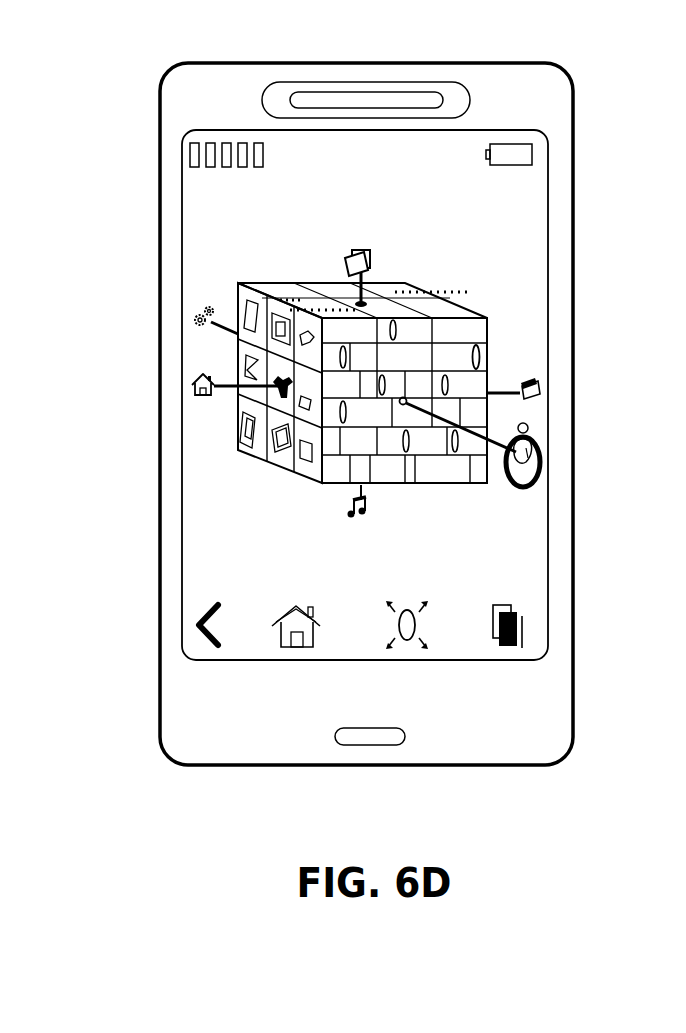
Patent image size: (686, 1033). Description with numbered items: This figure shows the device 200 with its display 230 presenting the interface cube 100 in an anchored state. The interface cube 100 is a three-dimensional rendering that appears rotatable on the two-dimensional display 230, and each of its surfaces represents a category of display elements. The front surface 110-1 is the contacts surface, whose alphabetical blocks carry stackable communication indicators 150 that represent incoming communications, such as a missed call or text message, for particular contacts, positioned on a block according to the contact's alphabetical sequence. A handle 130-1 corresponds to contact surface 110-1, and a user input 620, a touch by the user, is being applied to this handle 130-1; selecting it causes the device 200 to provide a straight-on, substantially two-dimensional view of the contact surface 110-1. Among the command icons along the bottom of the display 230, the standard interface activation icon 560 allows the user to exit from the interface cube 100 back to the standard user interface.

The device 200 is at (197, 46).
The display 230 is at (250, 130).
The interface cube 100 is at (378, 365).
The surface 110-1 is at (485, 323).
The communication indicator 150 is at (485, 365).
The handle 130-1 is at (527, 428).
The user input 620 is at (522, 487).
The standard interface activation icon 560 is at (520, 652).